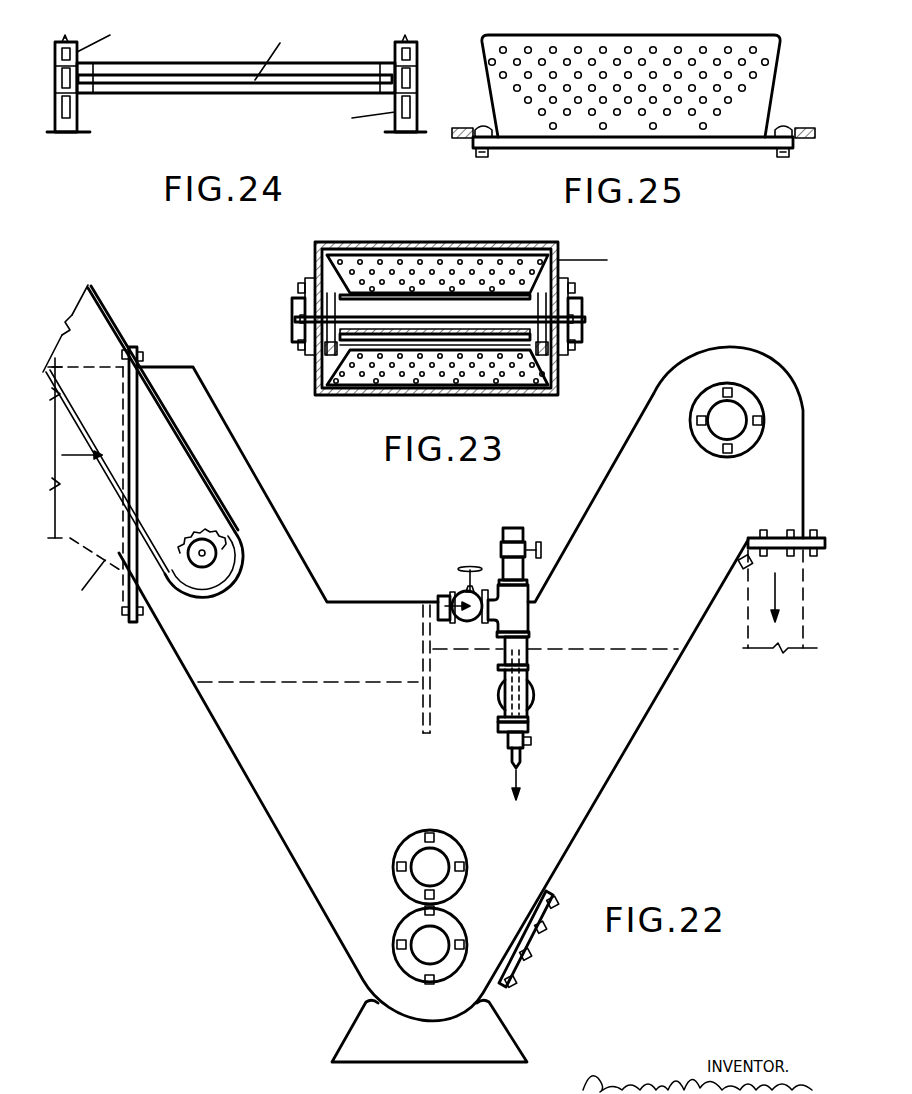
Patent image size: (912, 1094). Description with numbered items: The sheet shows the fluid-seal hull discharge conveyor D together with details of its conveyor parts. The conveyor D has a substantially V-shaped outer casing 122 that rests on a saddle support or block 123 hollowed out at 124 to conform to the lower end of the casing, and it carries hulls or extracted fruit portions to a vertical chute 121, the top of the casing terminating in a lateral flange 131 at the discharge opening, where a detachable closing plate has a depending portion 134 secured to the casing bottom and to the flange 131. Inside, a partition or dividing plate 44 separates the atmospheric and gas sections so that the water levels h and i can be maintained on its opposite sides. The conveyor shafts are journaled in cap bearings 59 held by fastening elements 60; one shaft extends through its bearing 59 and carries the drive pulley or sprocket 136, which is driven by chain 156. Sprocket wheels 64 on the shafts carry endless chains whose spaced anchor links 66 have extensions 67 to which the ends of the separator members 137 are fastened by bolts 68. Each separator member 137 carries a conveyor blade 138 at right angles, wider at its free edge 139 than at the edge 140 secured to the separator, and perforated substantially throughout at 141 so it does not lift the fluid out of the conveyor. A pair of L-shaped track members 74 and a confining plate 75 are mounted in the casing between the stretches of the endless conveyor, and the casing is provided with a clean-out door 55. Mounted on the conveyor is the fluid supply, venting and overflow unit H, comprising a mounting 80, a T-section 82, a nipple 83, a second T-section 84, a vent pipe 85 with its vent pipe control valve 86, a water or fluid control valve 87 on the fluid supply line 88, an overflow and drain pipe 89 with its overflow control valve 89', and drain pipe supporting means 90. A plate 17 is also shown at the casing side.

In FIG. 22, the mounting plate 17 is at (549, 897).
In FIG. 22, the partition or dividing plate 44 is at (422, 670).
In FIG. 22, the clean out door 55 is at (520, 967).
In FIG. 23, the cap bearings 59 is at (292, 317).
In FIG. 22, the cap bearings 59 is at (743, 402).
In FIG. 22, the fastening elements 60 is at (433, 833).
In FIG. 23, the sprocket wheels 64 is at (318, 300).
In FIG. 24, the anchor links 66 is at (418, 77).
In FIG. 24, the extensions 67 is at (387, 62).
In FIG. 25, the extensions 67 is at (480, 127).
In FIG. 23, the extensions 67 is at (530, 297).
In FIG. 25, the bolts 68 is at (781, 125).
In FIG. 23, the L-shaped track members 74 is at (318, 368).
In FIG. 23, the confining plate 75 is at (438, 330).
In FIG. 22, the mounting 80 is at (498, 695).
In FIG. 22, the T-section 82 is at (530, 690).
In FIG. 22, the nipple 83 is at (528, 646).
In FIG. 22, the T-section 84 is at (524, 619).
In FIG. 22, the vent pipe 85 is at (517, 530).
In FIG. 22, the vent pipe control valve 86 is at (539, 541).
In FIG. 22, the water or fluid control valve 87 is at (470, 566).
In FIG. 22, the fluid supply line 88 is at (436, 616).
In FIG. 22, the overflow and drain pipe 89 is at (493, 766).
In FIG. 22, the overflow control valve 89' is at (550, 754).
In FIG. 22, the drain pipe supporting means 90 is at (530, 728).
In FIG. 22, the vertical chute 121 is at (757, 650).
In FIG. 22, the outer casing 122 is at (312, 575).
In FIG. 22, the saddle support or block 123 is at (355, 1037).
In FIG. 22, the hollowed out portion 124 is at (430, 1020).
In FIG. 22, the lateral flange 131 is at (773, 540).
In FIG. 22, the depending portion 134 is at (743, 567).
In FIG. 22, the drive pulley or sprocket 136 is at (184, 520).
In FIG. 24, the separator members 137 is at (200, 63).
In FIG. 25, the separator members 137 is at (548, 142).
In FIG. 23, the separator members 137 is at (450, 300).
In FIG. 25, the perforated plate 138 is at (638, 47).
In FIG. 23, the perforated plate 138 is at (348, 272).
In FIG. 25, the free edges 139 is at (552, 34).
In FIG. 25, the edge 140 is at (725, 139).
In FIG. 23, the edge 140 is at (400, 295).
In FIG. 25, the perforations 141 is at (703, 50).
In FIG. 23, the perforations 141 is at (347, 385).
In FIG. 22, the chain 156 is at (106, 325).
In FIG. 22, the fluid supply, venting and overflow unit H is at (443, 593).
In FIG. 22, the hull discharge conveyor D is at (289, 774).
In FIG. 22, the water level i is at (275, 682).
In FIG. 22, the water level h is at (633, 651).